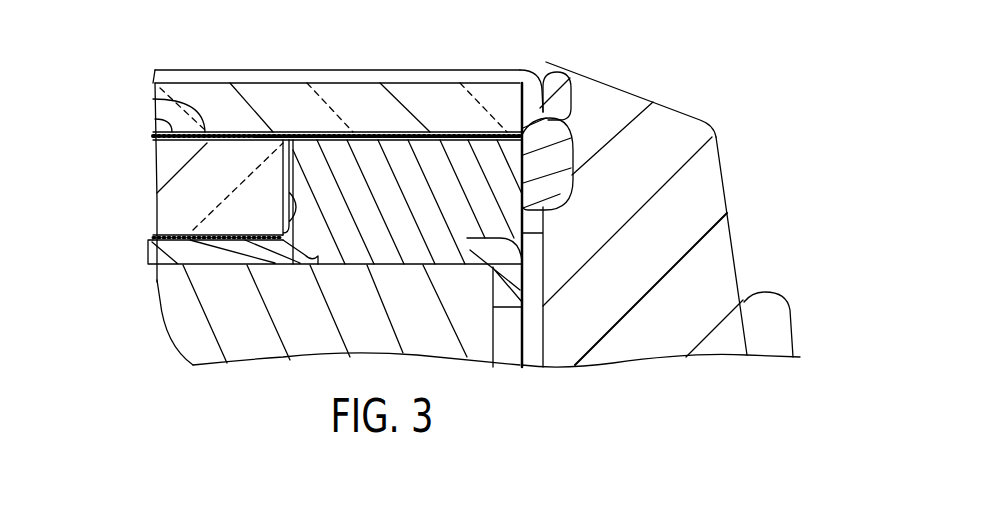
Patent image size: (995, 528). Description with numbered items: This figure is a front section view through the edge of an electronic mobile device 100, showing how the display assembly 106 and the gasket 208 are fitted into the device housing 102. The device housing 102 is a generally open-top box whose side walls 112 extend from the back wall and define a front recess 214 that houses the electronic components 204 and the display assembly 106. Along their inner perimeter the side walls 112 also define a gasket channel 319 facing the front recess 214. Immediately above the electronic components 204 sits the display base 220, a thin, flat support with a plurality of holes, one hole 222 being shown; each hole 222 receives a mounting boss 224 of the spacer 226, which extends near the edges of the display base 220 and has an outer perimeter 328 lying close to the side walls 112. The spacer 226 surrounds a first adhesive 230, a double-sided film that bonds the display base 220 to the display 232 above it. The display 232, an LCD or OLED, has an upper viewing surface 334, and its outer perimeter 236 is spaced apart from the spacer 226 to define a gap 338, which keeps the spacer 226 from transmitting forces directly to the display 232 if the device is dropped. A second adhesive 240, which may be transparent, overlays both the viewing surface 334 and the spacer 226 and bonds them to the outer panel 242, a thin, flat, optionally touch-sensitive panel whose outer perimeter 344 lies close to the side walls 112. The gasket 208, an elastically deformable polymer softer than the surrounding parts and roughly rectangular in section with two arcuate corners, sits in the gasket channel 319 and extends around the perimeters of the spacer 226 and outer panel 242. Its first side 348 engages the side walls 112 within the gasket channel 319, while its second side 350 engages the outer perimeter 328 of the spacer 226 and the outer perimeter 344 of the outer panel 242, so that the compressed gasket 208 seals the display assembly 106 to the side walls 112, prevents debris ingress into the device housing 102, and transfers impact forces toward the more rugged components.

The electronic mobile device 100 is at (735, 114).
The device housing 102 is at (742, 196).
The display assembly 106 is at (323, 71).
The side walls 112 is at (735, 257).
The electronic components 204 is at (497, 345).
The gasket 208 is at (556, 132).
The front recess 214 is at (296, 331).
The display base 220 is at (157, 292).
The hole 222 is at (310, 258).
The mounting boss 224 is at (412, 265).
The spacer 226 is at (377, 132).
The first adhesive 230 is at (160, 226).
The display 232 is at (153, 177).
The outer perimeter of the display 236 is at (258, 253).
The second adhesive 240 is at (153, 100).
The outer panel 242 is at (197, 83).
The gasket channel 319 is at (557, 72).
The outer perimeter of the spacer 328 is at (543, 236).
The viewing surface 334 is at (155, 118).
The gap 338 is at (296, 152).
The outer perimeter of the outer panel 344 is at (527, 97).
The first side of the gasket 348 is at (574, 152).
The second side of the gasket 350 is at (522, 155).